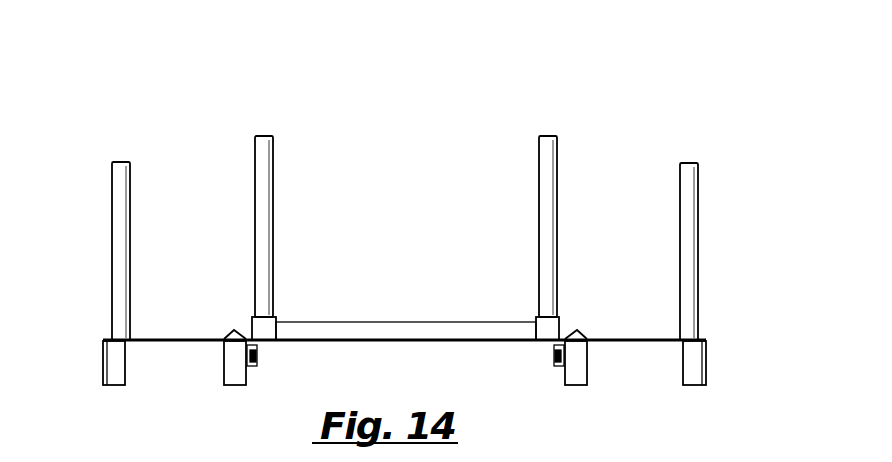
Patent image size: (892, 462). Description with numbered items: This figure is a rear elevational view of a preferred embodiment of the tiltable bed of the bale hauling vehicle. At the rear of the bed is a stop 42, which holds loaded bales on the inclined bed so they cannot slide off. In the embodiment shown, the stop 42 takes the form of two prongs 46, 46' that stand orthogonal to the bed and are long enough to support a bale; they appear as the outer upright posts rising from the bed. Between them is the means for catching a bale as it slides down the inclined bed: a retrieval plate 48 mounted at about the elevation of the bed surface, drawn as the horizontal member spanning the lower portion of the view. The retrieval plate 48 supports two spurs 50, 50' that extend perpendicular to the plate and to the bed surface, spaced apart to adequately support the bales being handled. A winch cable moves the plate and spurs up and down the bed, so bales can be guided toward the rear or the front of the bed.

The stop 42 is at (698, 215).
The prong 46 is at (93, 251).
The prong 46' is at (724, 251).
The retrieval plate 48 is at (403, 326).
The spur 50 is at (234, 237).
The spur 50' is at (580, 237).